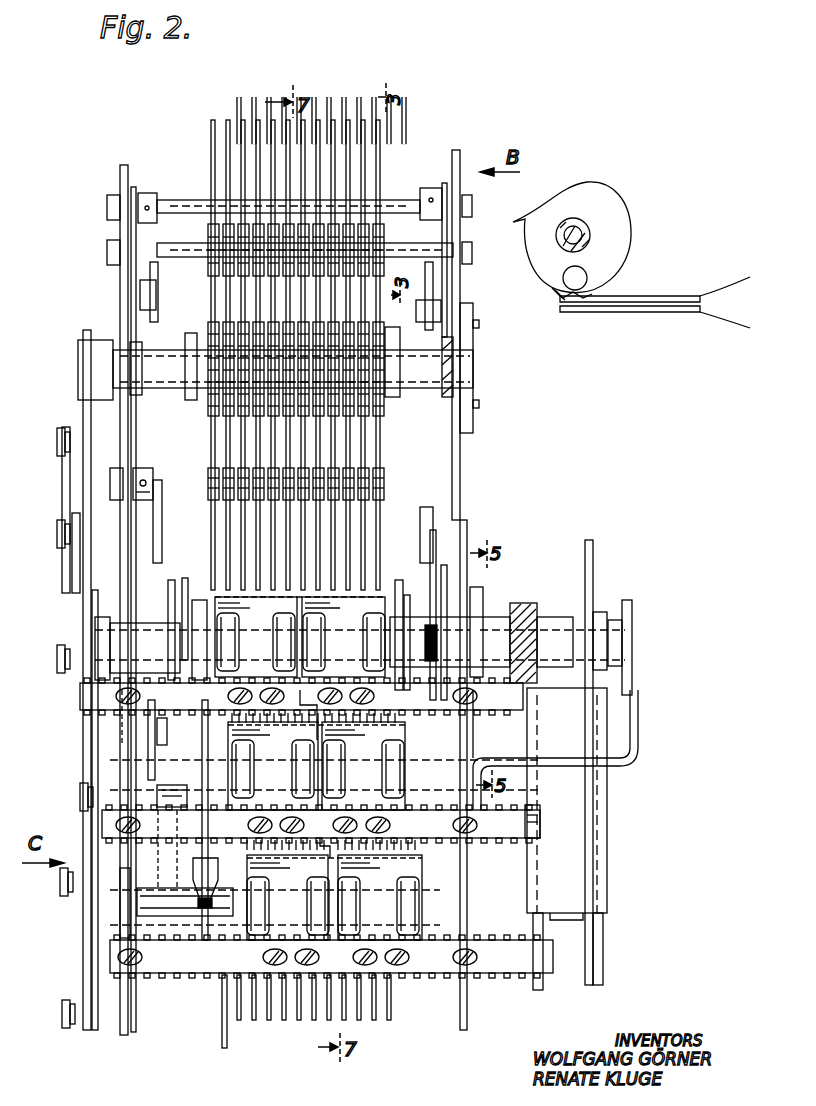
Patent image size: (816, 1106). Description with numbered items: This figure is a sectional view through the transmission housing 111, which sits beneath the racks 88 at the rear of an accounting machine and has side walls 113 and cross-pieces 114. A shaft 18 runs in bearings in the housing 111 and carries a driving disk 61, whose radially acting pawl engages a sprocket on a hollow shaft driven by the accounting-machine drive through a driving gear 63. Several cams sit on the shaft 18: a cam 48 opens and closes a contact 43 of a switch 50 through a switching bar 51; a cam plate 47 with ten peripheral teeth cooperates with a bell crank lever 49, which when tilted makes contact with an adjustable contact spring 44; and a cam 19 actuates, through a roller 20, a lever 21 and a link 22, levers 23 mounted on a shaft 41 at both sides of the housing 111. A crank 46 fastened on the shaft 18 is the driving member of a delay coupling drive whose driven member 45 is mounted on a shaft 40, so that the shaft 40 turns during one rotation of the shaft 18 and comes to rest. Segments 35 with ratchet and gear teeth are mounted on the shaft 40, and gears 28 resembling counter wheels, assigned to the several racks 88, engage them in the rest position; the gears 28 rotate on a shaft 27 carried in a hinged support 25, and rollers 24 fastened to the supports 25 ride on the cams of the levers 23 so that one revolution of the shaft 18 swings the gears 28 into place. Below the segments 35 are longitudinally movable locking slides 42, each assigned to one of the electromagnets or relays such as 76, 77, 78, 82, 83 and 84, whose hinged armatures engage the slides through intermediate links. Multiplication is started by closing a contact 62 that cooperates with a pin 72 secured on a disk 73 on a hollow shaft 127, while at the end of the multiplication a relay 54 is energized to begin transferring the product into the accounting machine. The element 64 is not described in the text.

The side walls 113 is at (120, 168).
The racks 88 is at (238, 112).
The shaft 27 is at (200, 213).
The gears 28 is at (372, 243).
The hinged support 25 is at (458, 258).
The rollers 24 is at (436, 305).
The segments 35 is at (215, 300).
The levers 23 is at (178, 436).
The gear flange 64 is at (195, 432).
The shaft 40 is at (430, 368).
The housing 111 is at (462, 448).
The driven member 45 is at (85, 466).
The shaft 41 is at (160, 500).
The driving gear 63 is at (202, 500).
The link 22 is at (435, 545).
The cam 19 is at (440, 590).
The contact 62 is at (398, 580).
The lever 21 is at (445, 580).
The driving disk 61 is at (588, 540).
The shaft 18 is at (600, 612).
The hollow shaft 127 is at (545, 630).
The cam plate 47 is at (172, 605).
The cam 48 is at (188, 600).
The locking slides 42 is at (372, 592).
The electromagnet 76 is at (262, 652).
The electromagnet 82 is at (352, 652).
The crank 46 is at (97, 640).
The roller 20 is at (432, 668).
The bell crank lever 49 is at (148, 722).
The switching bar 51 is at (205, 745).
The electromagnet 77 is at (285, 779).
The electromagnet 83 is at (370, 774).
The contact spring 44 is at (157, 798).
The relay 54 is at (580, 888).
The switch 50 is at (175, 880).
The electromagnet 78 is at (300, 890).
The electromagnet 84 is at (382, 904).
The contact 43 is at (215, 902).
The cross-pieces 114 is at (436, 968).
The disk 73 is at (630, 242).
The pin 72 is at (555, 290).